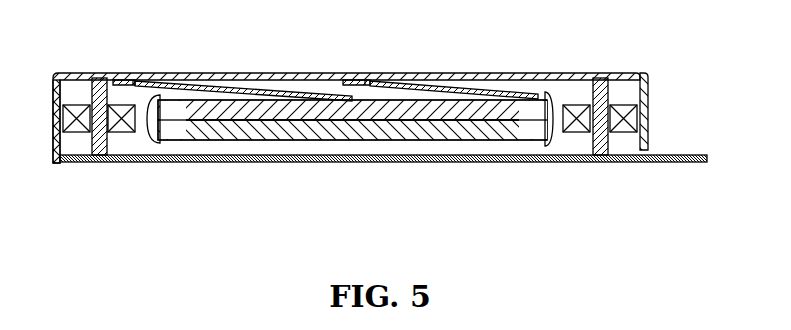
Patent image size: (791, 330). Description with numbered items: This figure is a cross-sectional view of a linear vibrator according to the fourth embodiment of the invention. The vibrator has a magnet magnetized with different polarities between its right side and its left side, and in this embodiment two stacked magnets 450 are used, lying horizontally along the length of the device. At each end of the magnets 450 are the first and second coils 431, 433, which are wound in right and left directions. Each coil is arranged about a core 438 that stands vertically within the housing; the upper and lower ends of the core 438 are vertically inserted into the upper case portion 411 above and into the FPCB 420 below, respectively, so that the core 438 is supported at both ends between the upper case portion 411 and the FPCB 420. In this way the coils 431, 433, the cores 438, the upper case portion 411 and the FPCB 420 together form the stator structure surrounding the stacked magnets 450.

The upper case portion 411 is at (508, 73).
The FPCB 420 is at (178, 162).
The first coil 431 is at (648, 120).
The second coil 433 is at (75, 128).
The core 438 is at (600, 160).
The magnets 450 is at (330, 132).